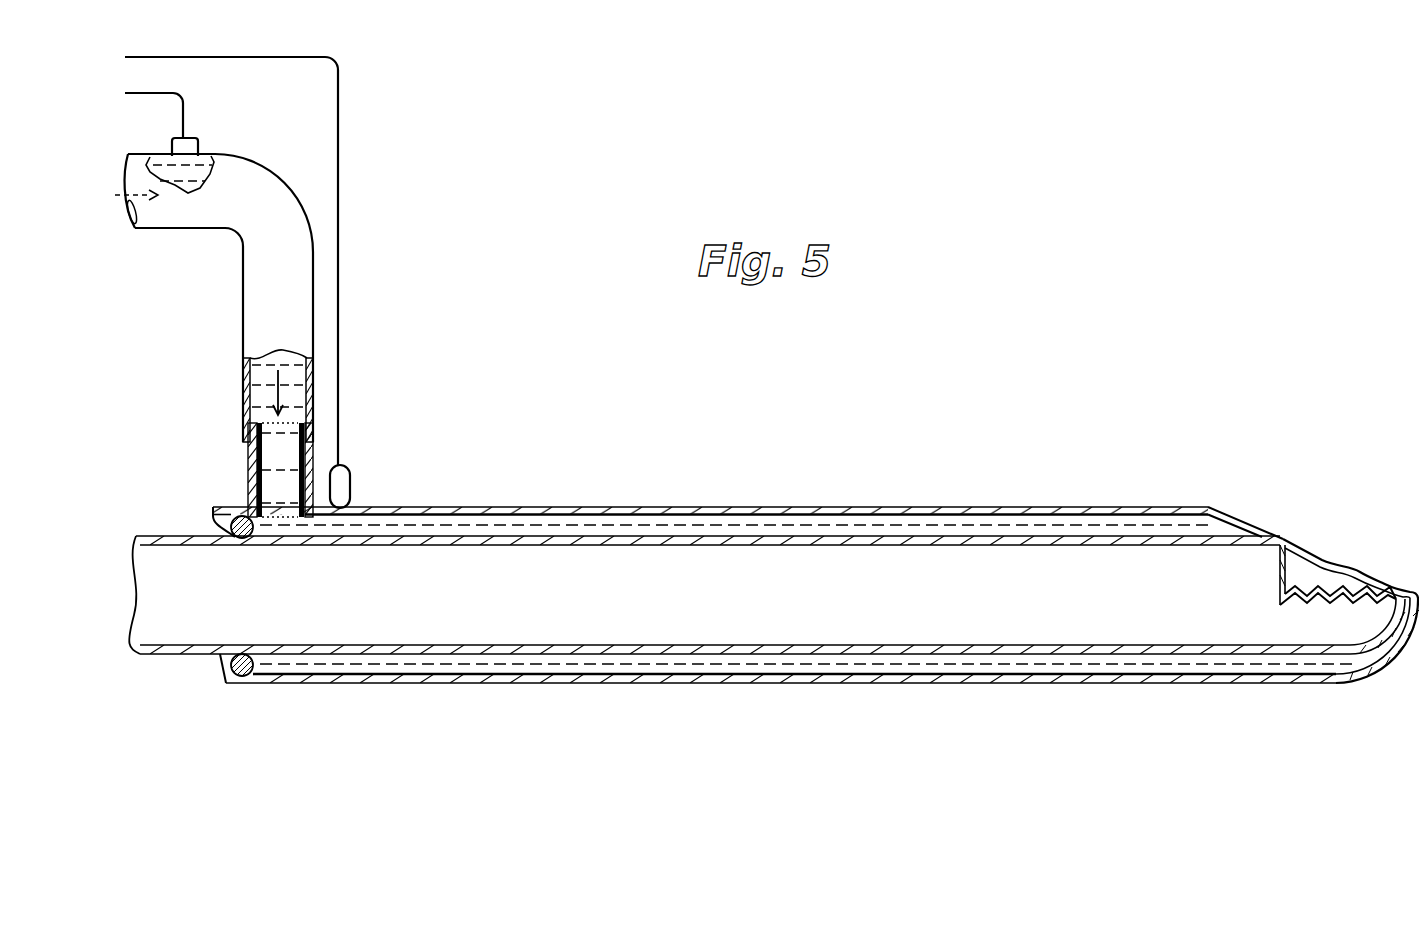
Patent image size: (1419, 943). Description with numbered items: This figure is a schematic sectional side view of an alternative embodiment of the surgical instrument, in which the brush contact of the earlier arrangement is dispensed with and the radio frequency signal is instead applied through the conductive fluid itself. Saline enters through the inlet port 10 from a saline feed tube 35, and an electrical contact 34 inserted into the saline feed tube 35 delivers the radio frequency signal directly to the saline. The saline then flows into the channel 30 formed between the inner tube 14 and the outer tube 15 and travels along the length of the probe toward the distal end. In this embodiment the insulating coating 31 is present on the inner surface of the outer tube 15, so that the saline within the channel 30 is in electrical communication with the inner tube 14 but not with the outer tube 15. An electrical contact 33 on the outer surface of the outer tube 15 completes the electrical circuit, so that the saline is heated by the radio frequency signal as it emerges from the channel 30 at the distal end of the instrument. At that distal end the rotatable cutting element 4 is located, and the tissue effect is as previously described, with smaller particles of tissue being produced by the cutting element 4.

The rotatable cutting element 4 is at (1290, 593).
The inlet port 10 is at (243, 455).
The inner tube 14 is at (952, 538).
The outer tube 15 is at (1060, 683).
The channel 30 is at (690, 520).
The insulating coating 31 is at (678, 675).
The electrical contact 33 is at (345, 483).
The electrical contact 34 is at (190, 147).
The saline feed tube 35 is at (185, 220).